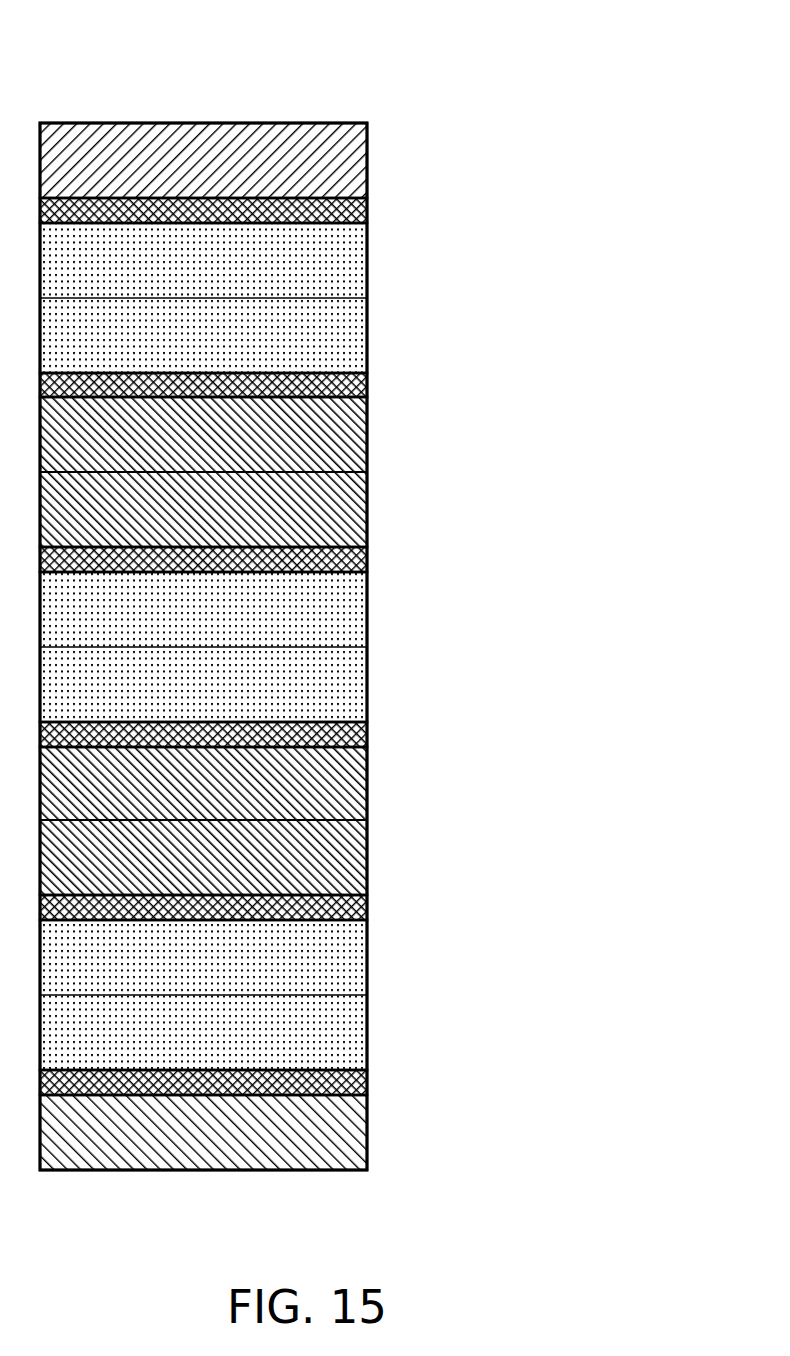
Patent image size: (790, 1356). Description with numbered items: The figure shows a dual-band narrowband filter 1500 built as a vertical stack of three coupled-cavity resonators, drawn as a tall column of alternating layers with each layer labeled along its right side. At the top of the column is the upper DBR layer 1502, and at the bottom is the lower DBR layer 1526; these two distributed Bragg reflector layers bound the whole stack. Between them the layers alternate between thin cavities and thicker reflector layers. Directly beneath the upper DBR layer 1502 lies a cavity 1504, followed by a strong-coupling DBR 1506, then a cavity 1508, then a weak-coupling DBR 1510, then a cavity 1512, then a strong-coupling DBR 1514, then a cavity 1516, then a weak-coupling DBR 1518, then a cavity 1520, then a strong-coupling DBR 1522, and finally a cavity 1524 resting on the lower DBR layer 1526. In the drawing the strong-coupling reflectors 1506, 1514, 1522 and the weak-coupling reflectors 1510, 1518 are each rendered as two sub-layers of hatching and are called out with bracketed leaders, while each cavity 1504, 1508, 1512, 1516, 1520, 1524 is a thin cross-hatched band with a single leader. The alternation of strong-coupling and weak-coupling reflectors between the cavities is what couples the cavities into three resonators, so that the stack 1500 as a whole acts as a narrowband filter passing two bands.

The dual-band narrowband filter 1500 is at (195, 92).
The upper DBR layer 1502 is at (377, 152).
The cavity 1504 is at (377, 212).
The strong-coupling DBR 1506 is at (390, 250).
The cavity 1508 is at (377, 388).
The weak-coupling DBR 1510 is at (390, 425).
The cavity 1512 is at (377, 562).
The strong-coupling DBR 1514 is at (390, 600).
The cavity 1516 is at (377, 737).
The weak-coupling DBR 1518 is at (390, 773).
The cavity 1520 is at (377, 912).
The strong-coupling DBR 1522 is at (390, 948).
The cavity 1524 is at (377, 1085).
The lower DBR layer 1526 is at (379, 1148).